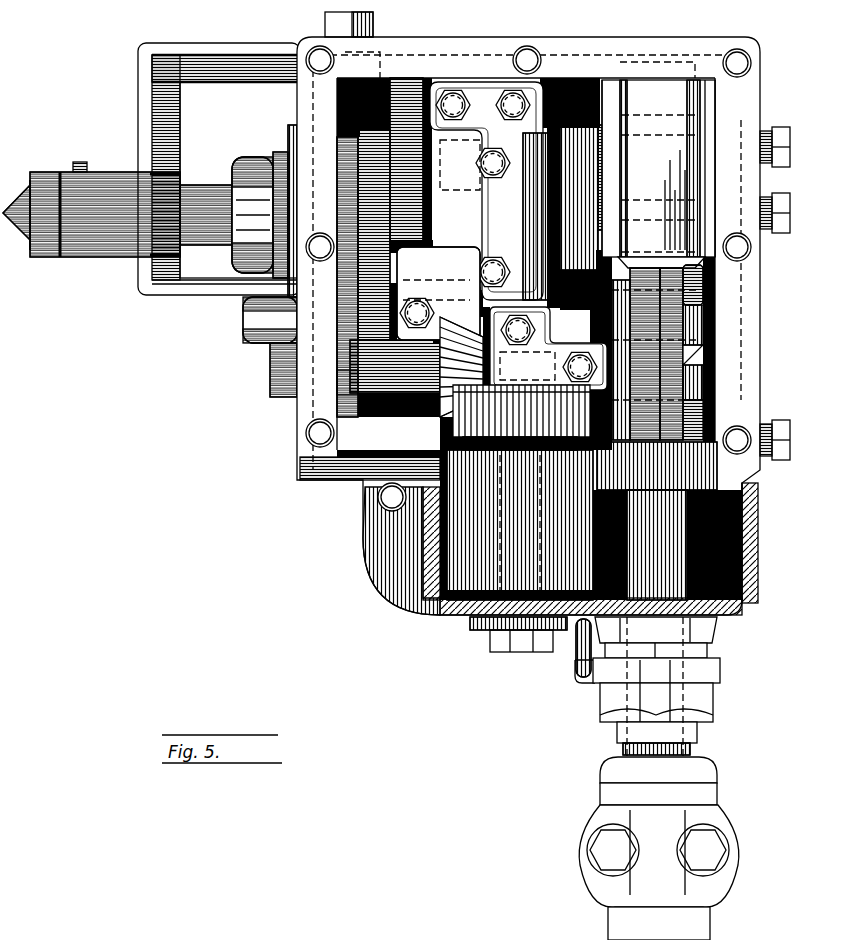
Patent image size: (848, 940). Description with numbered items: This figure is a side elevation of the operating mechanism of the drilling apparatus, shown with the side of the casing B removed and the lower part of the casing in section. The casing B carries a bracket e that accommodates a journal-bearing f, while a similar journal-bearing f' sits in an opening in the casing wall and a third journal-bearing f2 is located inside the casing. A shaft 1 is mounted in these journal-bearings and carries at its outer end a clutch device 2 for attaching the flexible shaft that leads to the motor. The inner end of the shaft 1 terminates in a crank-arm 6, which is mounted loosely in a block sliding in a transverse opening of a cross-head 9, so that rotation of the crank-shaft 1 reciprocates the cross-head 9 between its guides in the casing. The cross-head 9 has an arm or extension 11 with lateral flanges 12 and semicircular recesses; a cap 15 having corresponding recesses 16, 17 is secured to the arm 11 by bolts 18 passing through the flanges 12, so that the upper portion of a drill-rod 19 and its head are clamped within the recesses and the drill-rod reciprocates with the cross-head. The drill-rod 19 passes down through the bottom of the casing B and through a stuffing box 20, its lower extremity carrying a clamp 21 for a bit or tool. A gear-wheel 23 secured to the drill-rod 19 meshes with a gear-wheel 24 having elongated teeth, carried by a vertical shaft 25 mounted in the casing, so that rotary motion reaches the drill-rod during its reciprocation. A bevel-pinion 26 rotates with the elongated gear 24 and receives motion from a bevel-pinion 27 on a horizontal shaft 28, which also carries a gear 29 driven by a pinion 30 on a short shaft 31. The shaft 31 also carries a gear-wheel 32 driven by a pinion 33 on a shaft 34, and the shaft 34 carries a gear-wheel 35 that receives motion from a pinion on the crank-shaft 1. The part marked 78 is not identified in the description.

The bracket e is at (219, 157).
The casing B is at (543, 313).
The journal-bearing f is at (105, 203).
The journal-bearing f' is at (262, 211).
The journal-bearing f2 is at (490, 191).
The shaft 1 is at (206, 207).
The clutch device 2 is at (16, 203).
The crank-arm 6 is at (588, 192).
The cross-head 9 is at (658, 168).
The arm or extension 11 is at (615, 360).
The lateral flanges 12 is at (645, 354).
The cap 15 is at (720, 327).
The recess 16 is at (703, 362).
The recess 17 is at (635, 260).
The bolts 18 is at (703, 286).
The drill-rod 19 is at (715, 622).
The stuffing box 20 is at (708, 700).
The clamp 21 is at (668, 848).
The gear-wheel 23 is at (712, 483).
The gear-wheel 24 is at (447, 620).
The vertical shaft 25 is at (512, 648).
The bevel-pinion 26 is at (527, 388).
The bevel-pinion 27 is at (511, 383).
The horizontal shaft 28 is at (340, 400).
The gear 29 is at (340, 378).
The pinion 30 is at (337, 300).
The short shaft 31 is at (337, 270).
The gear-wheel 32 is at (470, 262).
The pinion 33 is at (345, 197).
The shaft 34 is at (340, 146).
The gear-wheel 35 is at (407, 78).
The collar 78 is at (703, 383).